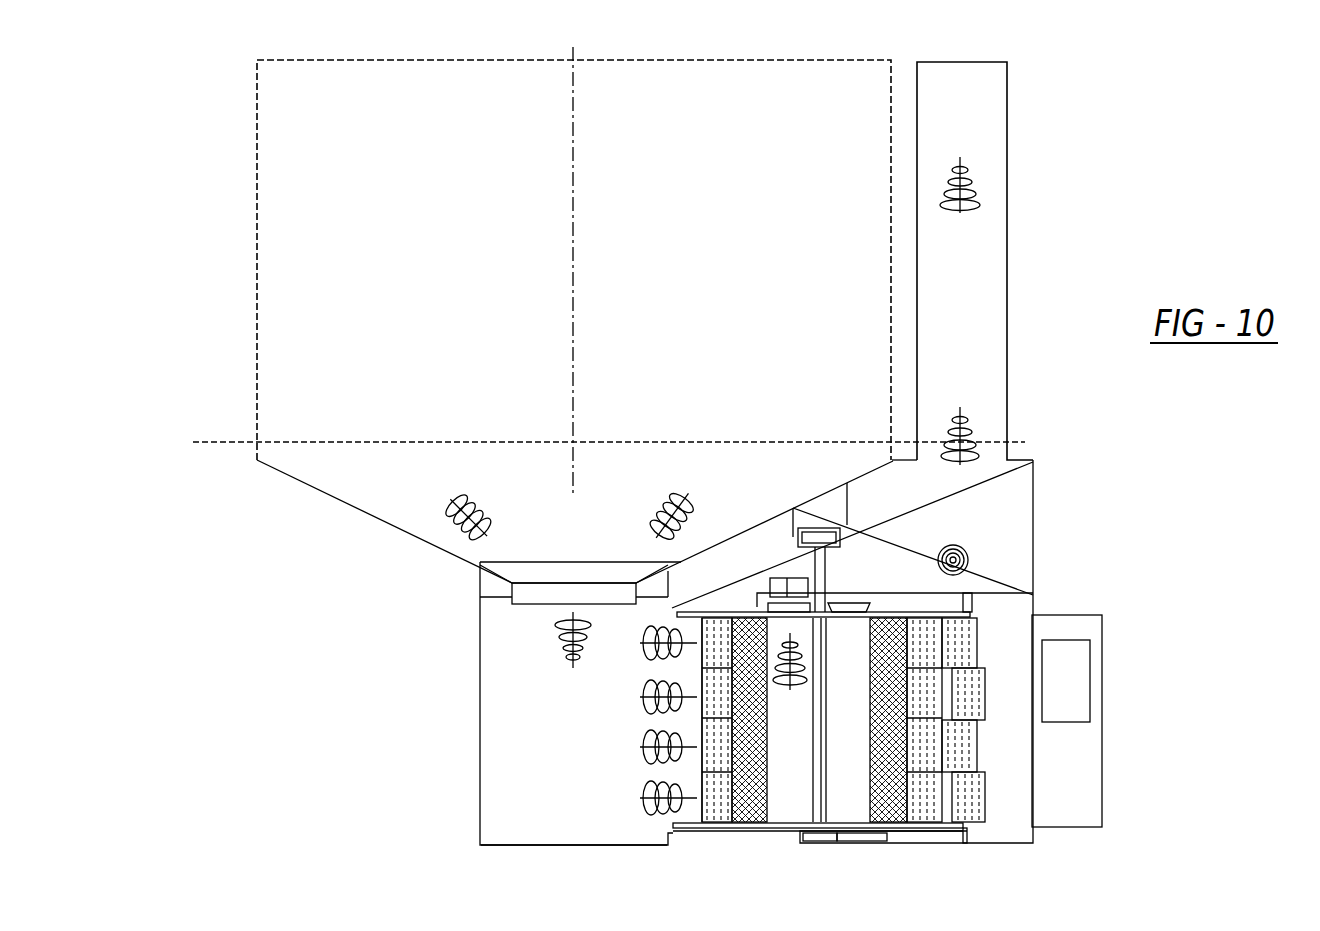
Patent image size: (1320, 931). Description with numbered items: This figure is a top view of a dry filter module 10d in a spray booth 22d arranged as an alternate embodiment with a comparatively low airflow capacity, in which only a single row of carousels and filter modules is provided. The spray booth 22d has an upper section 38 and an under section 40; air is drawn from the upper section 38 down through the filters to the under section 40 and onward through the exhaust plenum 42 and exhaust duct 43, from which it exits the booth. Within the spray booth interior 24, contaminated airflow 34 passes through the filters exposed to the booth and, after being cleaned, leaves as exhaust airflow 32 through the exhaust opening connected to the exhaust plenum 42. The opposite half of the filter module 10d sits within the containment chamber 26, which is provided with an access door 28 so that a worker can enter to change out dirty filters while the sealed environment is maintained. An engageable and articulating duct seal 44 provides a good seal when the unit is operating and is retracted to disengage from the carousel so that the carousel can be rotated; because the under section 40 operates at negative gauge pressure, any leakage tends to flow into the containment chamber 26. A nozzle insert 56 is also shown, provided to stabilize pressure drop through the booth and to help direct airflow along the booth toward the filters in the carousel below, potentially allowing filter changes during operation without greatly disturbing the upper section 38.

The dry filter module 10d is at (975, 627).
The spray booth 22d is at (1040, 193).
The spray booth interior 24 is at (565, 741).
The containment chamber 26 is at (1017, 825).
The access door 28 is at (1073, 762).
The exhaust airflow 32 is at (785, 690).
The contaminated airflow 34 is at (447, 512).
The upper section 38 is at (737, 248).
The under section 40 is at (573, 801).
The exhaust plenum 42 is at (1032, 507).
The exhaust duct 43 is at (1006, 318).
The duct seal 44 is at (777, 580).
The nozzle insert 56 is at (635, 593).